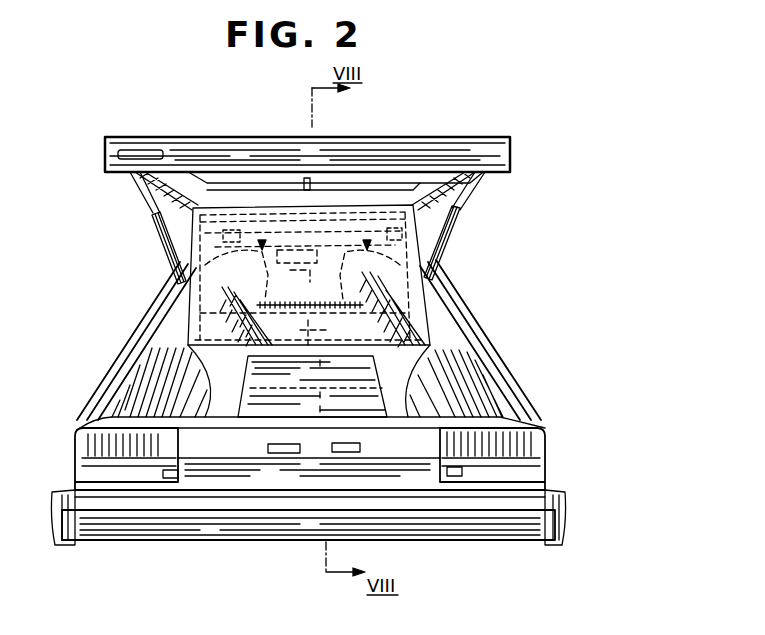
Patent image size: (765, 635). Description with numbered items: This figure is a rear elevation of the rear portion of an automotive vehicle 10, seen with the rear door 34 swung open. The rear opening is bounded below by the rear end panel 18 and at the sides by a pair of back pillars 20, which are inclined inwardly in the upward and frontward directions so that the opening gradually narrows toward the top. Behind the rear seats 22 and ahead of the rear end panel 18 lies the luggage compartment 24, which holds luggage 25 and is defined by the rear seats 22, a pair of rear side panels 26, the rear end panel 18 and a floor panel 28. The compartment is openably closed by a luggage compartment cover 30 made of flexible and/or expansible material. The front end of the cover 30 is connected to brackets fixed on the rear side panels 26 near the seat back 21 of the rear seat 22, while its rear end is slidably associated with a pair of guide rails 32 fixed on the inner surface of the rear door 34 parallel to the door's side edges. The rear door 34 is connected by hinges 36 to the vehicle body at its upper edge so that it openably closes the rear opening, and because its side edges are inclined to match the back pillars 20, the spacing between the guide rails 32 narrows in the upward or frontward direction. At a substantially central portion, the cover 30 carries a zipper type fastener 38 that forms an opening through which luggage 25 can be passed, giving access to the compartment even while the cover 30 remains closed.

The automotive vehicle 10 is at (473, 133).
The rear end panel 18 is at (380, 477).
The back pillars 20 is at (152, 303).
The seat back 21 is at (347, 245).
The rear seats 22 is at (262, 240).
The luggage compartment 24 is at (393, 397).
The luggage 25 is at (278, 402).
The rear side panels 26 is at (157, 393).
The floor panel 28 is at (398, 407).
The luggage compartment cover 30 is at (420, 228).
The guide rails 32 is at (183, 198).
The rear door 34 is at (495, 153).
The hinges 36 is at (232, 228).
The zipper type fastener 38 is at (290, 302).